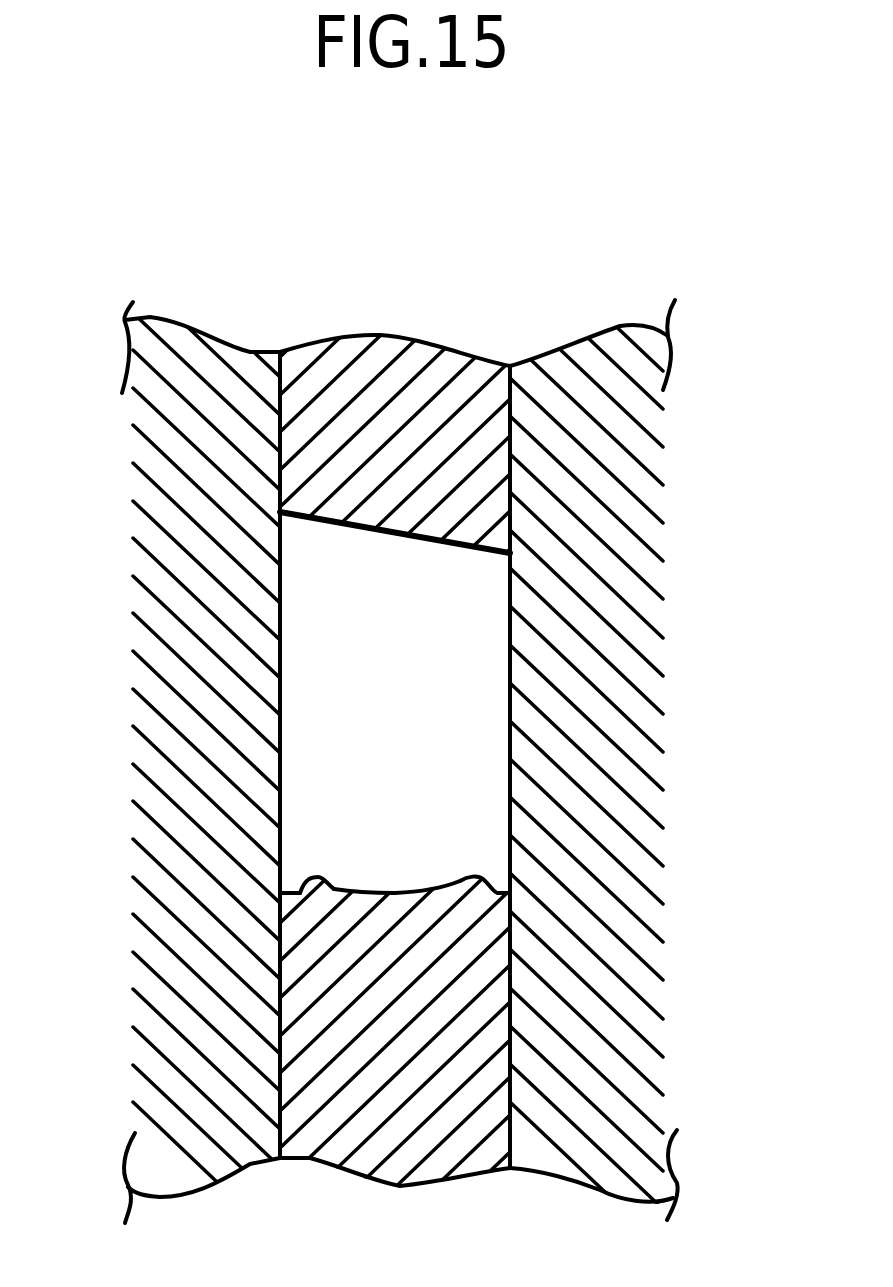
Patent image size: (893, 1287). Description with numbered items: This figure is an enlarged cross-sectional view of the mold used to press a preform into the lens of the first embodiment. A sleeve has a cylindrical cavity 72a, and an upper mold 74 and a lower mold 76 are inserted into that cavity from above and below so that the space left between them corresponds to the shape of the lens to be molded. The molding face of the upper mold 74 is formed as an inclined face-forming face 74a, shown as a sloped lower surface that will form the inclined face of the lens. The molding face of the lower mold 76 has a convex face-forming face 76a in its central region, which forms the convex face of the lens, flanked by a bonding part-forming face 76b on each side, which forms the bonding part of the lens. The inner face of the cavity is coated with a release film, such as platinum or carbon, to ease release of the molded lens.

The upper mold 74 is at (495, 462).
The inclined face-forming face 74a is at (357, 535).
The cylindrical cavity 72a is at (492, 675).
The lower mold 76 is at (303, 1040).
The convex face-forming face 76a is at (393, 880).
The bonding part-forming face 76b is at (293, 880).